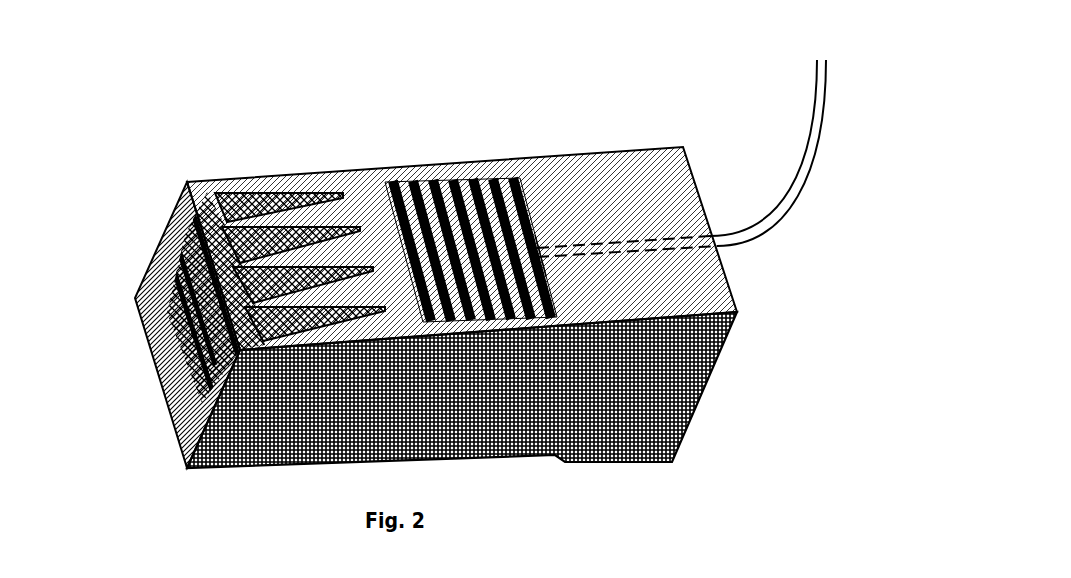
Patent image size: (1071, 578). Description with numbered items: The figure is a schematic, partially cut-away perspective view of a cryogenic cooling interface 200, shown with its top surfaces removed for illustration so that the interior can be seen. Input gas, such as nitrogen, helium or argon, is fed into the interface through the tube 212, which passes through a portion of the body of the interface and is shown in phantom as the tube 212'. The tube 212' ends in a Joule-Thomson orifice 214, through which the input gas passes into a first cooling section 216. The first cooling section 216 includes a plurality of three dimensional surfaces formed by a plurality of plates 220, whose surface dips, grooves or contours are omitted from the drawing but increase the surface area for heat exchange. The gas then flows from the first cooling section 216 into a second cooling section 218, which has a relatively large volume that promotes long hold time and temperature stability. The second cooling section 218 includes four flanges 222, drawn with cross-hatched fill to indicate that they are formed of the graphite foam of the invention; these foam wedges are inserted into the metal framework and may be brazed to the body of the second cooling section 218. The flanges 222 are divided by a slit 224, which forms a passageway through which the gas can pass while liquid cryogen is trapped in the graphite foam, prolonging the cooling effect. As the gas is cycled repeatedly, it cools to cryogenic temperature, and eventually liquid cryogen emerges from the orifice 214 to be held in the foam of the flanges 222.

The cryogenic cooling interface 200 is at (136, 156).
The tube 212 is at (768, 153).
The tube (shown in phantom) 212' is at (627, 234).
The Joule-Thomson orifice 214 is at (540, 258).
The first cooling section 216 is at (457, 162).
The second cooling section 218 is at (275, 190).
The plates 220 is at (473, 205).
The flanges 222 is at (200, 235).
The slit 224 is at (178, 283).